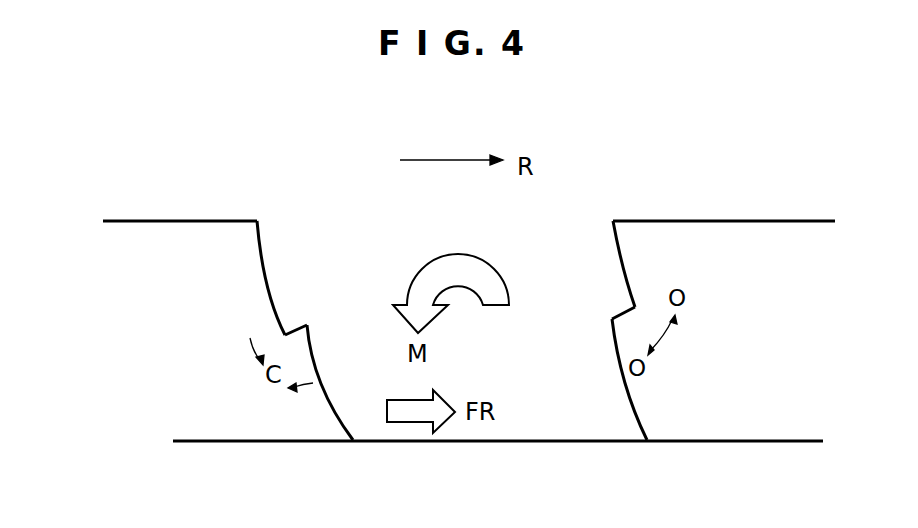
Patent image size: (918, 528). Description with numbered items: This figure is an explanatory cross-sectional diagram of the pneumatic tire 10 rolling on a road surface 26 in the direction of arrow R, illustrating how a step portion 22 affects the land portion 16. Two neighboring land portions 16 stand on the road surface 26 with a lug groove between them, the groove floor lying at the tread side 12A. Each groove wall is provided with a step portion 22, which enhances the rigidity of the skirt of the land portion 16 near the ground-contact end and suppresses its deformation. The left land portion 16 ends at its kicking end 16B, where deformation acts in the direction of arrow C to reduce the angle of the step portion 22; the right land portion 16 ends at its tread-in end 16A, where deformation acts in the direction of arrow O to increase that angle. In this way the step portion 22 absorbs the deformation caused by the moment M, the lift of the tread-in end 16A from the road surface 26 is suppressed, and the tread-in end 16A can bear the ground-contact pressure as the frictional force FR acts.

The pneumatic tire 10 is at (133, 308).
The land portion 16 is at (620, 248).
The step portion 22 is at (296, 336).
The kicking end 16B is at (353, 442).
The tread-in end 16A is at (648, 442).
The tread side 12A is at (513, 442).
The road surface 26 is at (785, 441).